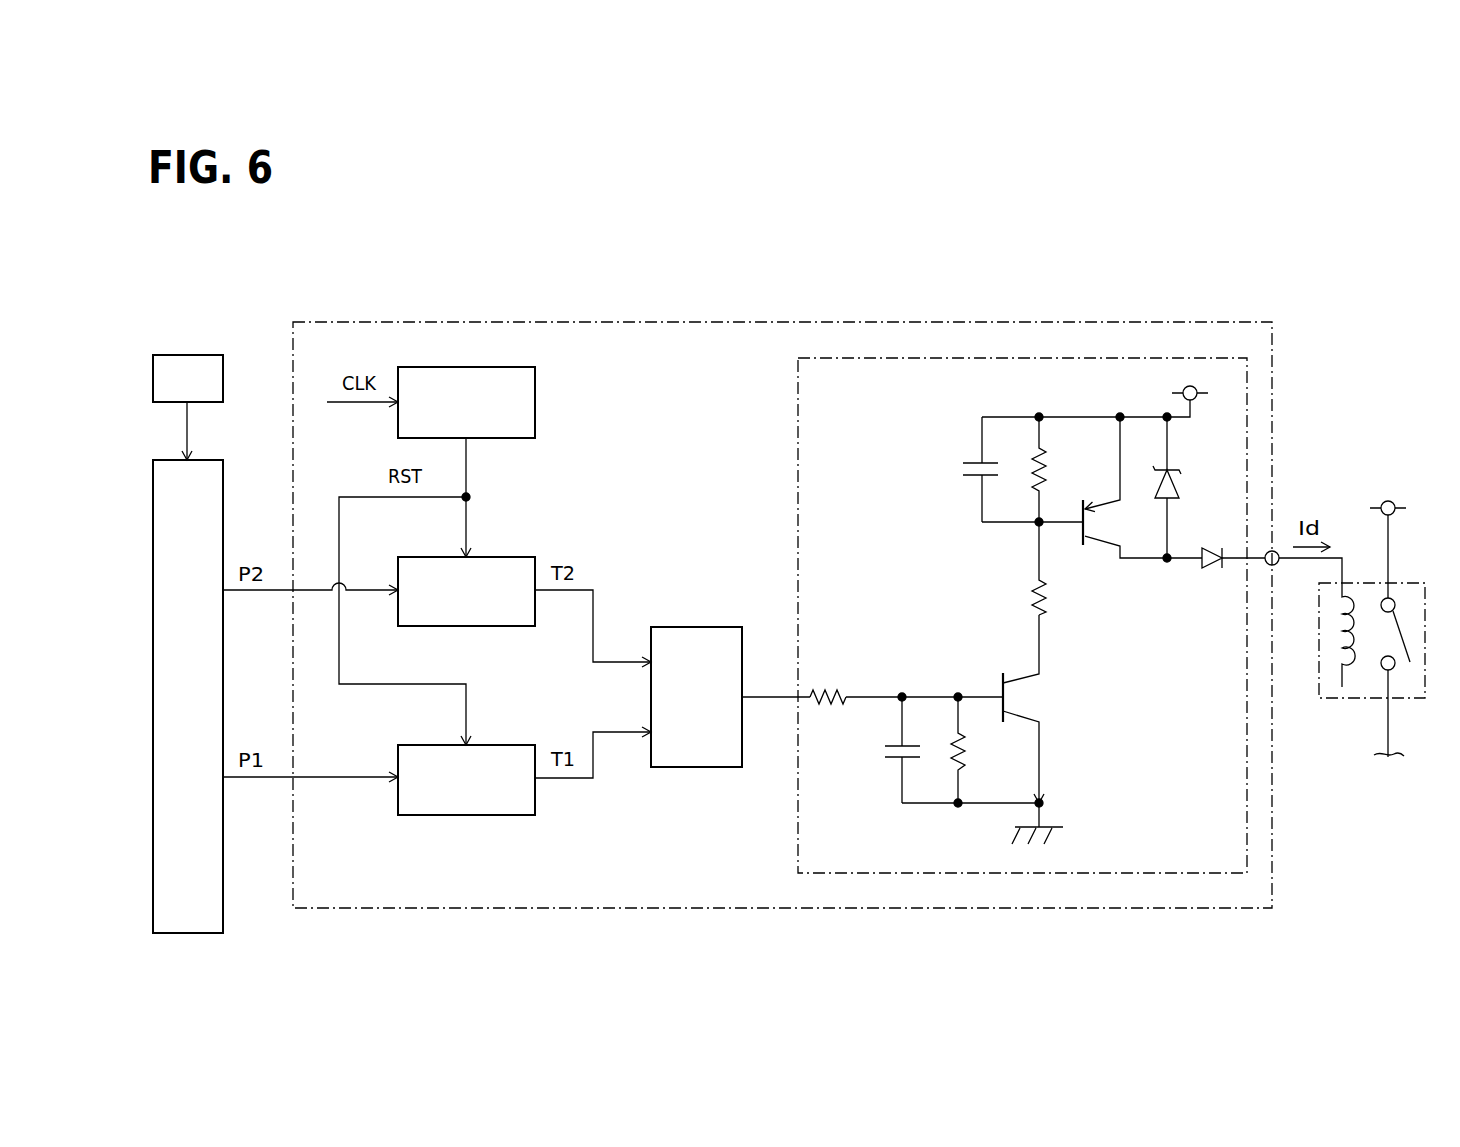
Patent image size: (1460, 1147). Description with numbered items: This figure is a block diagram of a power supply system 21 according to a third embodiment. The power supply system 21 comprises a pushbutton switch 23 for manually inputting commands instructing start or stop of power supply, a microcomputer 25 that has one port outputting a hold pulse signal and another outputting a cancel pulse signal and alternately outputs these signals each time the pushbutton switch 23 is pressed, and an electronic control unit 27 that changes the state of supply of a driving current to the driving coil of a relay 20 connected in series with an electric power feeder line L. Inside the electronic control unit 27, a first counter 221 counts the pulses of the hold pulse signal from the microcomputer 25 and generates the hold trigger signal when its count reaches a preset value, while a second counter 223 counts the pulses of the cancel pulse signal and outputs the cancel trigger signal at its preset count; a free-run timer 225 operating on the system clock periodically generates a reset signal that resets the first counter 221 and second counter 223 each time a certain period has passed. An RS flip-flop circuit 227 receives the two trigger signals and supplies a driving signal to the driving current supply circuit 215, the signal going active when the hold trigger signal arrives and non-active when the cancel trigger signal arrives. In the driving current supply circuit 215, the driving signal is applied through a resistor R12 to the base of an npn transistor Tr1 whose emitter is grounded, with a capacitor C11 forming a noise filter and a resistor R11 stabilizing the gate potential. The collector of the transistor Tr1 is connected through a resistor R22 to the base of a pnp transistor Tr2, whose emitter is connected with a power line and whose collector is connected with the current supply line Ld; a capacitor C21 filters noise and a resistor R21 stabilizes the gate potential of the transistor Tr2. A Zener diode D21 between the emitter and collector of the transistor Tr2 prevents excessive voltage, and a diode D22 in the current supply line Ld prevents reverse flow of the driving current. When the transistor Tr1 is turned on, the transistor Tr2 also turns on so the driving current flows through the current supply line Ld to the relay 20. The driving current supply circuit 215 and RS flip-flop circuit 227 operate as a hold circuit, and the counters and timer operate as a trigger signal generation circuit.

The relay RLY 20 is at (1419, 583).
The power supply system 21 is at (222, 272).
The pushbutton switch 23 is at (203, 356).
The microcomputer 25 is at (203, 460).
The electronic control unit 27 is at (372, 322).
The driving current supply circuit 215 is at (798, 384).
The first counter 221 is at (505, 745).
The second counter 223 is at (505, 557).
The free-run timer 225 is at (505, 367).
The RS flip-flop circuit 227 is at (708, 627).
The resistor R12 is at (820, 688).
The capacitor C11 is at (880, 768).
The resistor R11 is at (965, 752).
The npn transistor Tr1 is at (1040, 709).
The resistor R22 is at (1048, 602).
The capacitor C21 is at (1005, 468).
The resistor R21 is at (1048, 474).
The pnp transistor Tr2 is at (1125, 487).
The Zener diode D21 is at (1182, 480).
The diode D22 is at (1212, 556).
The current supply line Ld is at (1177, 562).
The electric power feeder line L is at (1390, 724).